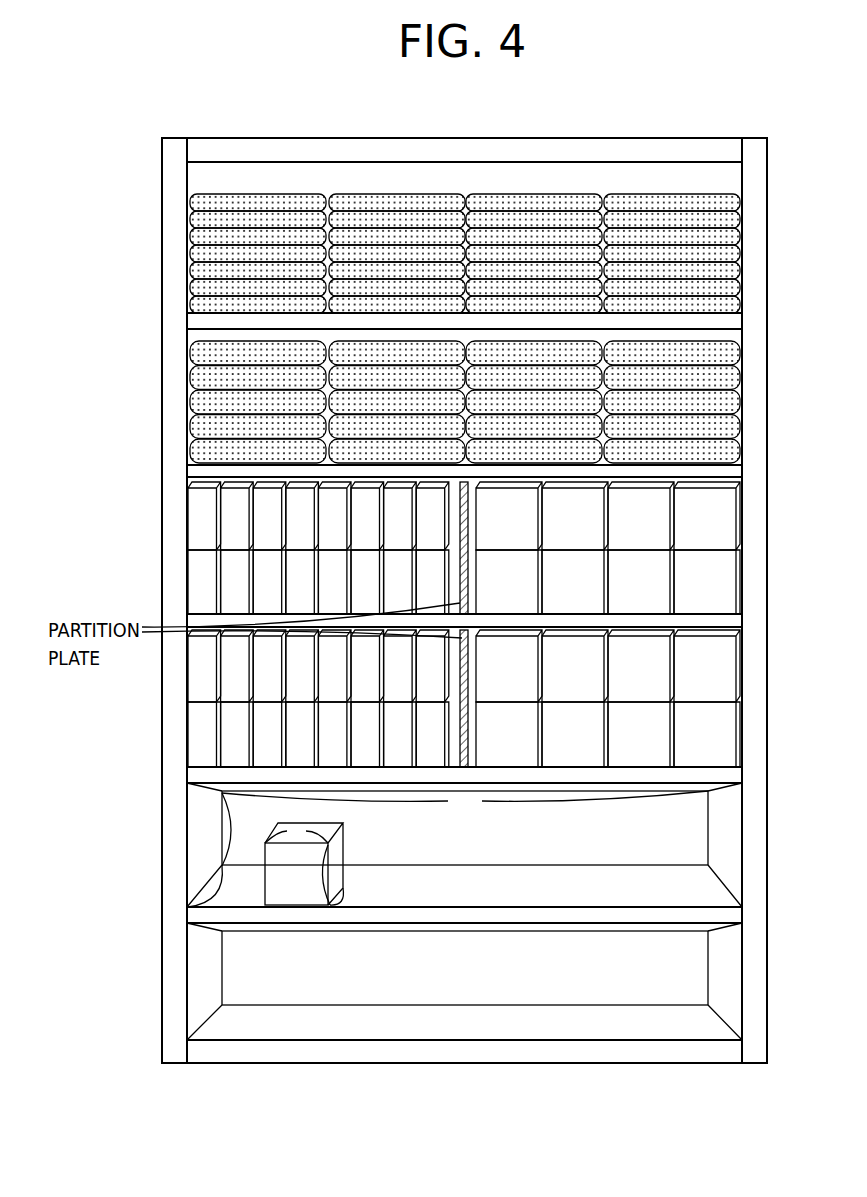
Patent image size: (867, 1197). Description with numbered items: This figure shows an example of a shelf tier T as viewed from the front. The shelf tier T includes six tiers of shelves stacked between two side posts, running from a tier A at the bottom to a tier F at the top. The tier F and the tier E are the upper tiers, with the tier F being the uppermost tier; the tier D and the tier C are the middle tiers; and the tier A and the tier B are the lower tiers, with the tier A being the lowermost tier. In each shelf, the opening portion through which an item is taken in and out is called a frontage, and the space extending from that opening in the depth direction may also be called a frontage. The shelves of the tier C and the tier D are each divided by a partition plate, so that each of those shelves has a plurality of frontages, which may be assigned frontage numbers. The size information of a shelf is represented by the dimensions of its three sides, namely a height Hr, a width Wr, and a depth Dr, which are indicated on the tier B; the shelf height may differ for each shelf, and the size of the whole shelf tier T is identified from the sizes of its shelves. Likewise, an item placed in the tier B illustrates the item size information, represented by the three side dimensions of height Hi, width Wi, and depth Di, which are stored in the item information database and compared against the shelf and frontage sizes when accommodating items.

The shelf tier T is at (440, 134).
The tier F is at (185, 290).
The tier E is at (185, 447).
The tier D is at (185, 594).
The tier C is at (185, 745).
The tier B is at (185, 871).
The tier A is at (185, 1017).
The shelf width Wr is at (465, 800).
The shelf height Hr is at (232, 829).
The shelf depth Dr is at (209, 886).
The item width Wi is at (304, 864).
The item height Hi is at (318, 875).
The item depth Di is at (342, 899).